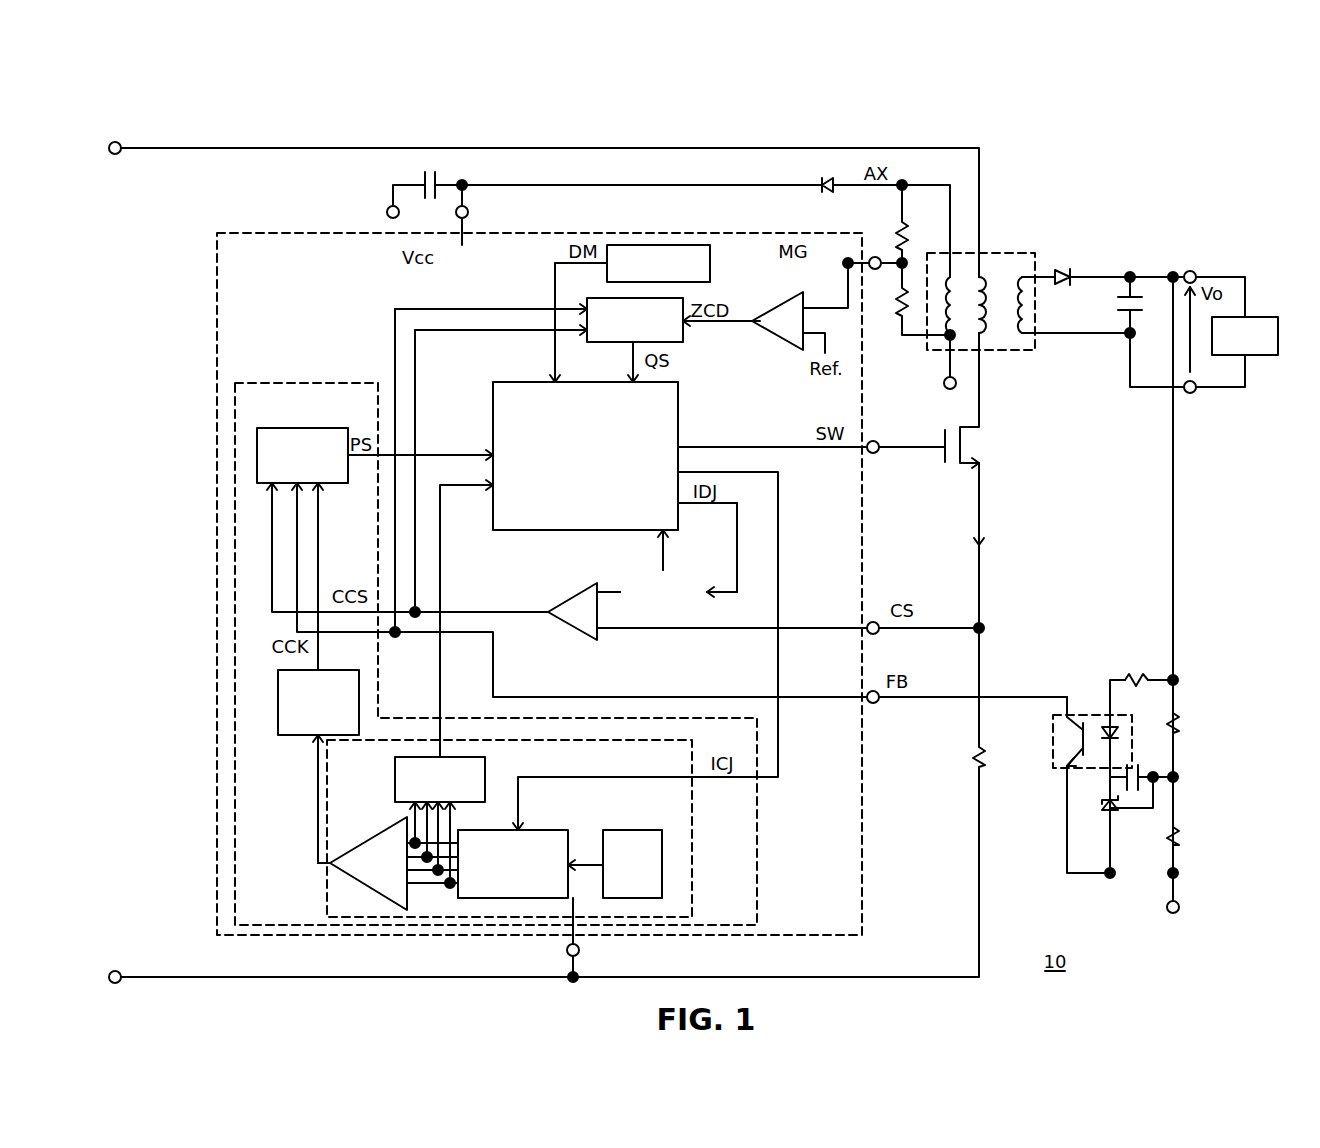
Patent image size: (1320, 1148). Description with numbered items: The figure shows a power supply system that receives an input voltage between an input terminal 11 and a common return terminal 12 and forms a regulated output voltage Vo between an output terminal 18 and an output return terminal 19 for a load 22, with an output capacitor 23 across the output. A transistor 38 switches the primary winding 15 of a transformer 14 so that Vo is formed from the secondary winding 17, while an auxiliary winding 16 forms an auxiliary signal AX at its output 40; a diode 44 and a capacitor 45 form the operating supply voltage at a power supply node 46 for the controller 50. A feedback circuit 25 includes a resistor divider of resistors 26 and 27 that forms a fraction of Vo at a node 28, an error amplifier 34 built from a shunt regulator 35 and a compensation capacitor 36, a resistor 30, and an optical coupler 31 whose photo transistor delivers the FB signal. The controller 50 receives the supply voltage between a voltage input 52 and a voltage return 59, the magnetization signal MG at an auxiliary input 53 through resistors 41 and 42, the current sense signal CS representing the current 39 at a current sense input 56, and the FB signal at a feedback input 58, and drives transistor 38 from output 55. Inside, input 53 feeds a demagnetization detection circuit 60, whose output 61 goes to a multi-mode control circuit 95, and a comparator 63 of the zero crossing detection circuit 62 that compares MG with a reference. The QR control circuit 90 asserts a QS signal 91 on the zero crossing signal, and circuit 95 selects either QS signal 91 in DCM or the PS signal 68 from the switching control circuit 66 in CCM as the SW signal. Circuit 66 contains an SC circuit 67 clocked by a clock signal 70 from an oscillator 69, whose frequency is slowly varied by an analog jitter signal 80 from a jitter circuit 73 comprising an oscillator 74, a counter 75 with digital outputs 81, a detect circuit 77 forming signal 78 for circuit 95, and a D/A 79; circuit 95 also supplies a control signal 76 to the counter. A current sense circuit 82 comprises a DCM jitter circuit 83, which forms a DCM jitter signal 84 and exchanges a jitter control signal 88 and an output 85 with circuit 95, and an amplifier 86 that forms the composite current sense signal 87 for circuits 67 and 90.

The input terminal 11 is at (119, 143).
The common return terminal 12 is at (386, 208).
The transformer 14 is at (1012, 252).
The primary winding 15 is at (985, 340).
The auxiliary winding 16 is at (940, 270).
The secondary winding 17 is at (1030, 256).
The output terminal 18 is at (1192, 270).
The output return terminal 19 is at (1194, 394).
The load 22 is at (1268, 356).
The output capacitor 23 is at (1116, 305).
The feedback circuit 25 is at (1195, 698).
The resistor 26 is at (1178, 738).
The resistor 27 is at (1180, 848).
The node 28 is at (1180, 779).
The resistor 30 is at (1136, 674).
The optical coupler 31 is at (1078, 715).
The error amplifier 34 is at (1075, 830).
The shunt regulator 35 is at (1102, 800).
The compensation capacitor 36 is at (1142, 768).
The transistor 38 is at (985, 447).
The current 39 is at (985, 550).
The output 40 is at (905, 182).
The resistor 41 is at (896, 232).
The resistor 42 is at (898, 315).
The diode 44 is at (812, 186).
The capacitor 45 is at (424, 177).
The power supply node 46 is at (465, 182).
The power supply control circuit 50 is at (216, 735).
The voltage input 52 is at (468, 210).
The auxiliary input 53 is at (872, 257).
The output 55 is at (876, 454).
The current sense input 56 is at (874, 621).
The feedback input 58 is at (877, 703).
The voltage return 59 is at (580, 951).
The demagnetization detection circuit 60 is at (710, 258).
The DM signal line 61 is at (553, 262).
The zero crossing detection circuit 62 is at (770, 345).
The comparator 63 is at (790, 350).
The switching control circuit 66 is at (320, 383).
The switching control circuit 67 is at (310, 428).
The pulse signal 68 is at (368, 462).
The oscillator 69 is at (296, 735).
The CCM clock signal 70 is at (322, 658).
The CCM frequency jitter circuit 73 is at (692, 855).
The oscillator 74 is at (618, 830).
The counter 75 is at (530, 830).
The ICJ signal 76 is at (780, 580).
The detect circuit 77 is at (485, 762).
The signal 78 is at (441, 735).
The digital to analog converter circuit 79 is at (395, 825).
The jitter signal 80 is at (320, 866).
The digital output 81 is at (445, 895).
The current sense circuit 82 is at (660, 628).
The DCM jitter circuit 83 is at (730, 578).
The DCM jitter signal 84 is at (612, 590).
The jitter output to control 85 is at (662, 560).
The amplifier 86 is at (568, 625).
The composite current sense signal 87 is at (540, 606).
The IDJ signal line 88 is at (738, 545).
The quasi-resonant control circuit 90 is at (612, 342).
The QR switching signal 91 is at (642, 378).
The multi-mode control circuit 95 is at (492, 392).